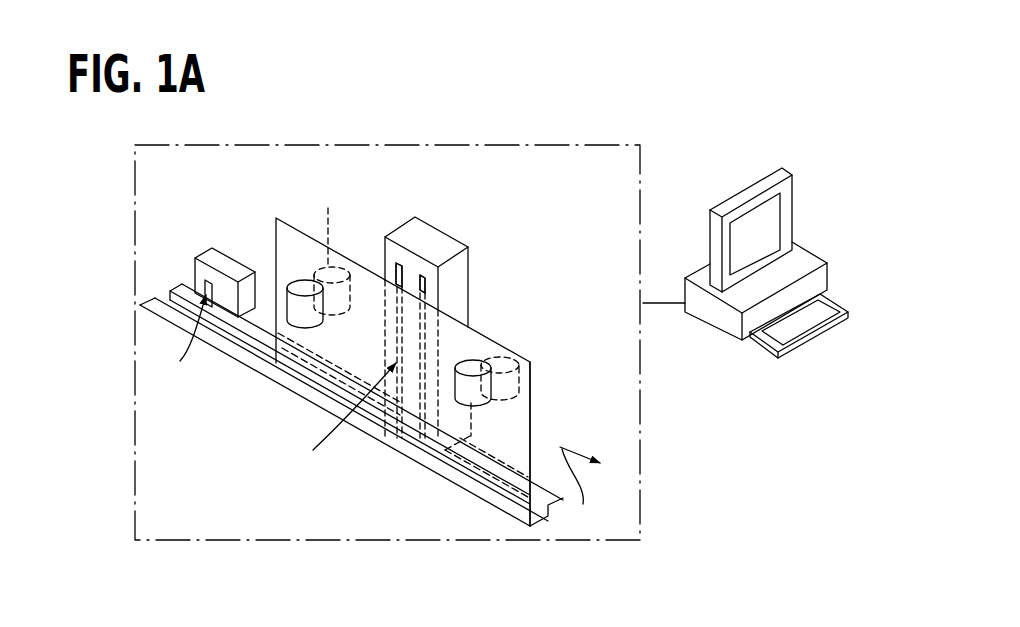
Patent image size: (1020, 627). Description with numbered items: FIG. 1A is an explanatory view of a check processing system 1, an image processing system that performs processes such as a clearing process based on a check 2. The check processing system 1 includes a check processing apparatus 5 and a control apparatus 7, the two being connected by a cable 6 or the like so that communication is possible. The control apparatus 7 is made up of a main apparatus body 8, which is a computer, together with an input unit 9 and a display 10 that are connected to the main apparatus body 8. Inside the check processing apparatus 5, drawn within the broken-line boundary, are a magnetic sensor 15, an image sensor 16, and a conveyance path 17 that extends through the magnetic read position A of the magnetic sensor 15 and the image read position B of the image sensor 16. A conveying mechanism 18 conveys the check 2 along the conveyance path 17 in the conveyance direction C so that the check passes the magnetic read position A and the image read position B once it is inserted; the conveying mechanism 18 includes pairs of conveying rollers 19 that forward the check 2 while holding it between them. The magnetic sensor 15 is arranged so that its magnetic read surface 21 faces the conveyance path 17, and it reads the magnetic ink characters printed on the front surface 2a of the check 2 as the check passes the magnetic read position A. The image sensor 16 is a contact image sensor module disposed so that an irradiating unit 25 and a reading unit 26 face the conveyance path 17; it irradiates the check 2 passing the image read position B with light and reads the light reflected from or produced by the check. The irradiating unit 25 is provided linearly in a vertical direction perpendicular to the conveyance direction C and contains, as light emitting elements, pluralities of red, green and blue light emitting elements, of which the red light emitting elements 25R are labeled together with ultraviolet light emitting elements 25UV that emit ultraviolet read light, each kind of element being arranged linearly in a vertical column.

The check processing system 1 is at (726, 92).
The check 2 is at (517, 443).
The front surface of check 2a is at (531, 395).
The check processing apparatus 5 is at (578, 141).
The cable 6 is at (667, 303).
The control apparatus 7 is at (800, 167).
The main apparatus body 8 is at (724, 325).
The input unit 9 is at (829, 303).
The display 10 is at (785, 214).
The magnetic sensor 15 is at (219, 257).
The image sensor 16 is at (470, 239).
The conveyance path 17 is at (168, 303).
The conveying mechanism 18 is at (508, 343).
The pairs of conveying rollers 19 is at (300, 287).
The magnetic read surface 21 is at (205, 287).
The irradiating unit 25 is at (399, 260).
The red light emitting elements 25R is at (383, 276).
The ultraviolet light emitting elements 25UV is at (422, 365).
The reading unit 26 is at (424, 272).
The magnetic read position A is at (183, 335).
The image read position B is at (344, 415).
The conveyance direction C is at (580, 487).